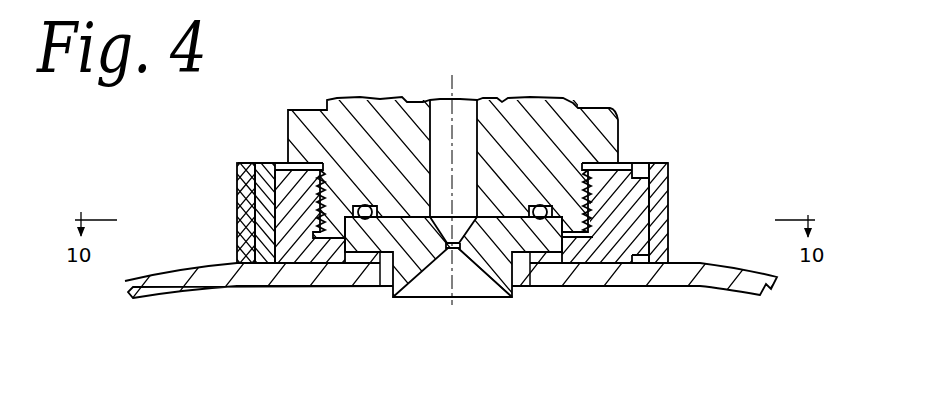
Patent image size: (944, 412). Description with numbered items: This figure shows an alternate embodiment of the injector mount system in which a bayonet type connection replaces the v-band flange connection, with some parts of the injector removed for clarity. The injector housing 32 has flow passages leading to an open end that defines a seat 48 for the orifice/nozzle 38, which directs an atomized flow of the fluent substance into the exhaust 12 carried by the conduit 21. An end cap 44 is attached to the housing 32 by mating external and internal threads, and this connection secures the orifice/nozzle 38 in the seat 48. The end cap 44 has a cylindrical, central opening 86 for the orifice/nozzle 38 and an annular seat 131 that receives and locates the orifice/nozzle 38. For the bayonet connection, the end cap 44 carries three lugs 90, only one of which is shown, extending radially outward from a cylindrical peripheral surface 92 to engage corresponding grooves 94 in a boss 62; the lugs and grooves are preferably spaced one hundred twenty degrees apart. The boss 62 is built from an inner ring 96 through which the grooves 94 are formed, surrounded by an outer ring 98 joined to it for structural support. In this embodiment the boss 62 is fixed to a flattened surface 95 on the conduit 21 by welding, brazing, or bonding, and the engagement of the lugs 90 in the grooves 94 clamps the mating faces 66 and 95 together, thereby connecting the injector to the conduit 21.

The exhaust 12 is at (436, 385).
The conduit 21 is at (153, 297).
The housing 32 is at (611, 106).
The orifice/nozzle 38 is at (389, 298).
The end cap 44 is at (283, 166).
The seat 48 is at (487, 232).
The boss 62 is at (670, 163).
The mating face 66 is at (290, 270).
The central opening 86 is at (522, 262).
The lug 90 is at (638, 200).
The cylindrical peripheral surface 92 is at (262, 195).
The groove 94 is at (640, 250).
The flattened surface 95 is at (245, 222).
The inner ring 96 is at (640, 163).
The outer ring 98 is at (655, 163).
The annular seat 131 is at (545, 240).